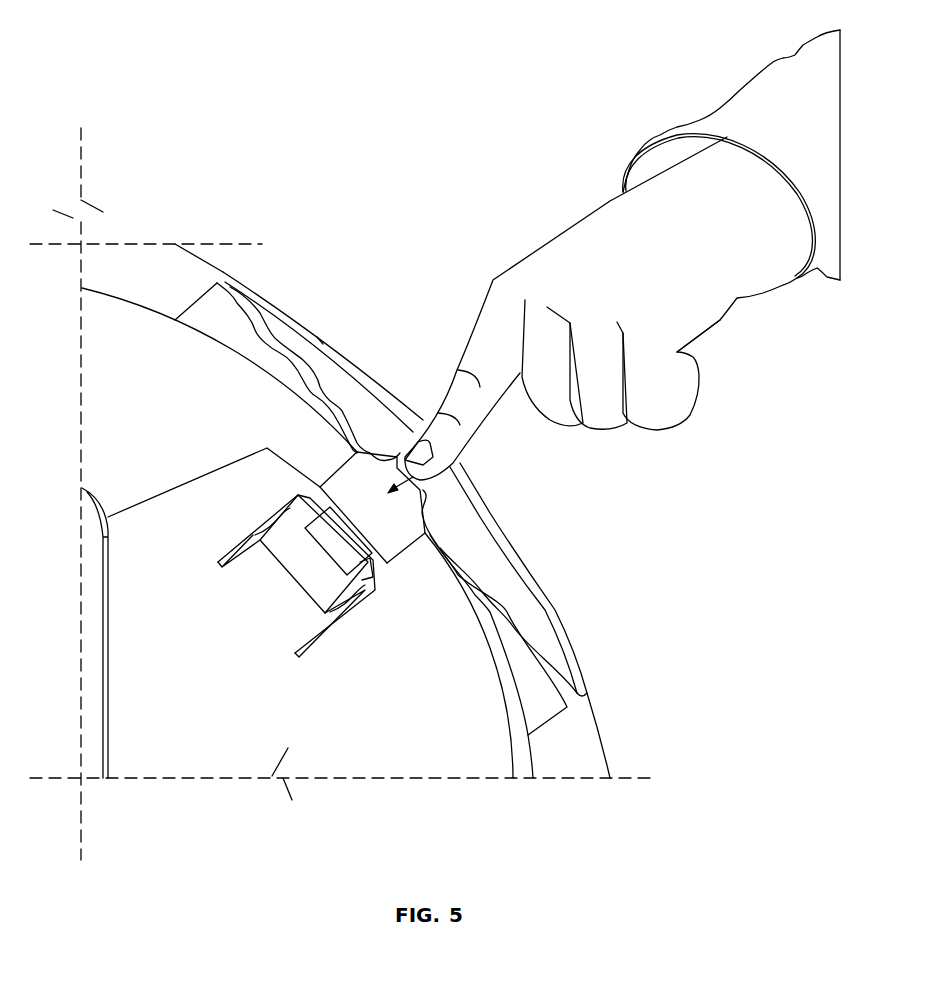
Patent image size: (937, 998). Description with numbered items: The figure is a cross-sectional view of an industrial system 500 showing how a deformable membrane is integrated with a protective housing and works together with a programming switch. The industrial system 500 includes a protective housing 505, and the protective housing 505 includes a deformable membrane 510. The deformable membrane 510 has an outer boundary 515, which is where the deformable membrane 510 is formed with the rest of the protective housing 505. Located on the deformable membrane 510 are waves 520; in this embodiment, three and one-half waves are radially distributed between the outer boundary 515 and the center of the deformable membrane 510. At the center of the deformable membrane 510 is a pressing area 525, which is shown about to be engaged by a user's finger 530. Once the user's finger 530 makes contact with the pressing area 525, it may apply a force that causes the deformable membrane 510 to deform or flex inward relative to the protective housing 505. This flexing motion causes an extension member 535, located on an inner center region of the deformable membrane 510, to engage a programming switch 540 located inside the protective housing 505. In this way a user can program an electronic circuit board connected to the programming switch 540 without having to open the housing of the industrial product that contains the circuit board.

The industrial system 500 is at (416, 172).
The protective housing 505 is at (366, 337).
The deformable membrane 510 is at (495, 540).
The outer boundary 515 is at (225, 274).
The waves 520 is at (530, 614).
The pressing area 525 is at (422, 490).
The user's finger 530 is at (587, 213).
The extension member 535 is at (405, 546).
The programming switch 540 is at (373, 563).